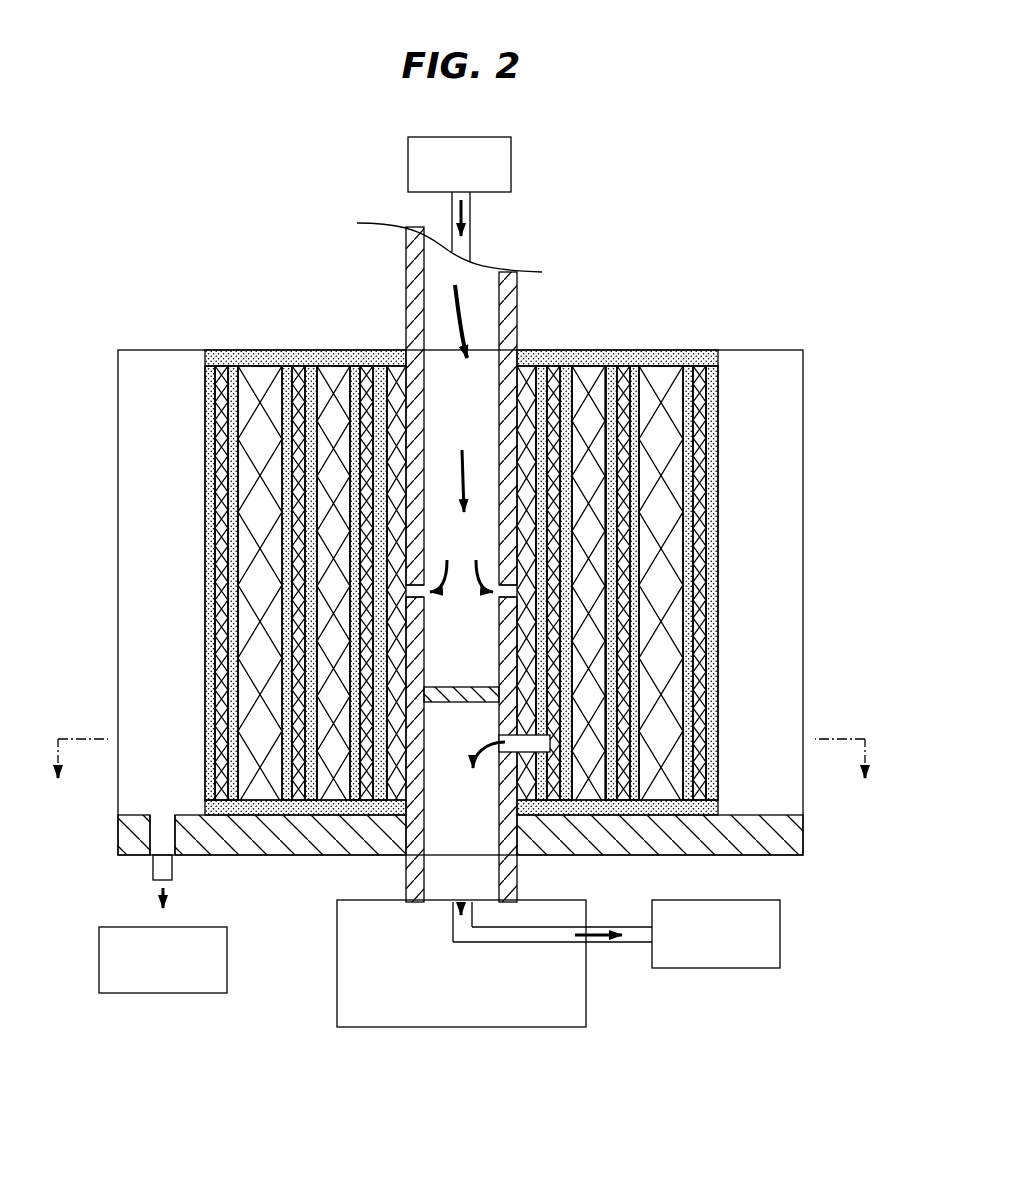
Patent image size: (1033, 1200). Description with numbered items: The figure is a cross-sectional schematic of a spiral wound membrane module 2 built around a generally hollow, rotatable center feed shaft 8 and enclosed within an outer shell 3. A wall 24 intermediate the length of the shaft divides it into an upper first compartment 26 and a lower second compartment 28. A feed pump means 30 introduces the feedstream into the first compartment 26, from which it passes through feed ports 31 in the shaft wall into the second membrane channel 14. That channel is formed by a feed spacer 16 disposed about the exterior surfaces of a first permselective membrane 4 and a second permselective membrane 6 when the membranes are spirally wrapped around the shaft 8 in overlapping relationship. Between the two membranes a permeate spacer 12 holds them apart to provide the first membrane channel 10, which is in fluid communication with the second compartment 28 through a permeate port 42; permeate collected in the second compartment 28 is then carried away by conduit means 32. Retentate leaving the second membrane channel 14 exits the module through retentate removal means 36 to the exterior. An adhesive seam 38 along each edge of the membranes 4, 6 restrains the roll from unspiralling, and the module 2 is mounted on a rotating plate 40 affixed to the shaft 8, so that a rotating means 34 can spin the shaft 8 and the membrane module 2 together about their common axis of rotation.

The spiral wound membrane module 2 is at (750, 368).
The outer shell 3 is at (83, 545).
The first permselective membrane 4 is at (205, 590).
The second permselective membrane 6 is at (237, 528).
The center feed shaft 8 is at (405, 266).
The first membrane channel 10 is at (212, 441).
The permeate spacer 12 is at (215, 474).
The second membrane channel 14 is at (252, 375).
The feed spacer 16 is at (278, 662).
The wall 24 is at (471, 703).
The first compartment 26 is at (462, 398).
The second compartment 28 is at (462, 872).
The feed pump means 30 is at (433, 137).
The feed ports 31 is at (488, 558).
The conduit means 32 is at (606, 926).
The rotating means 34 is at (365, 900).
The retentate removal means 36 is at (172, 870).
The adhesive seam 38 is at (700, 350).
The rotating plate 40 is at (774, 842).
The permeate port 42 is at (493, 753).